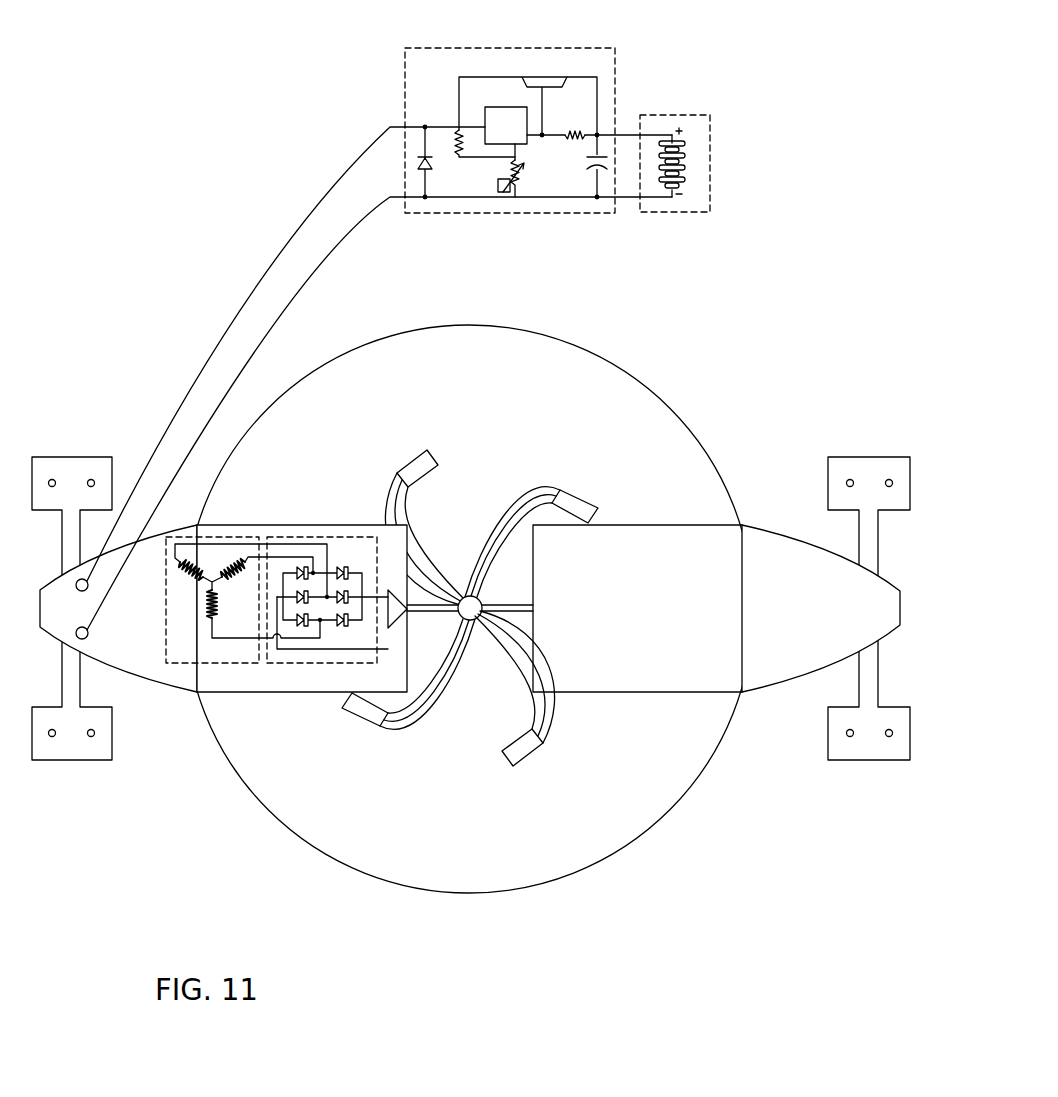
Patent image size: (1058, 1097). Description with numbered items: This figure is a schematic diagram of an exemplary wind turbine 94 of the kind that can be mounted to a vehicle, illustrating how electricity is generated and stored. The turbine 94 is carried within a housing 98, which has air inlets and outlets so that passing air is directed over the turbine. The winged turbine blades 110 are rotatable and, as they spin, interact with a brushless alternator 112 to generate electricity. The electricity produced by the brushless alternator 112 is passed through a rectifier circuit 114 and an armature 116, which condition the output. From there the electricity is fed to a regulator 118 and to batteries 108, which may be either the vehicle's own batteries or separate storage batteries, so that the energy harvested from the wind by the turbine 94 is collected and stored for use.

The wind turbine 94 is at (733, 390).
The housing 98 is at (402, 888).
The battery 108 is at (677, 200).
The winged turbine blade 110 is at (520, 753).
The brushless alternator 112 is at (677, 685).
The rectifier circuit 114 is at (295, 657).
The armature 116 is at (188, 657).
The regulator 118 is at (465, 48).